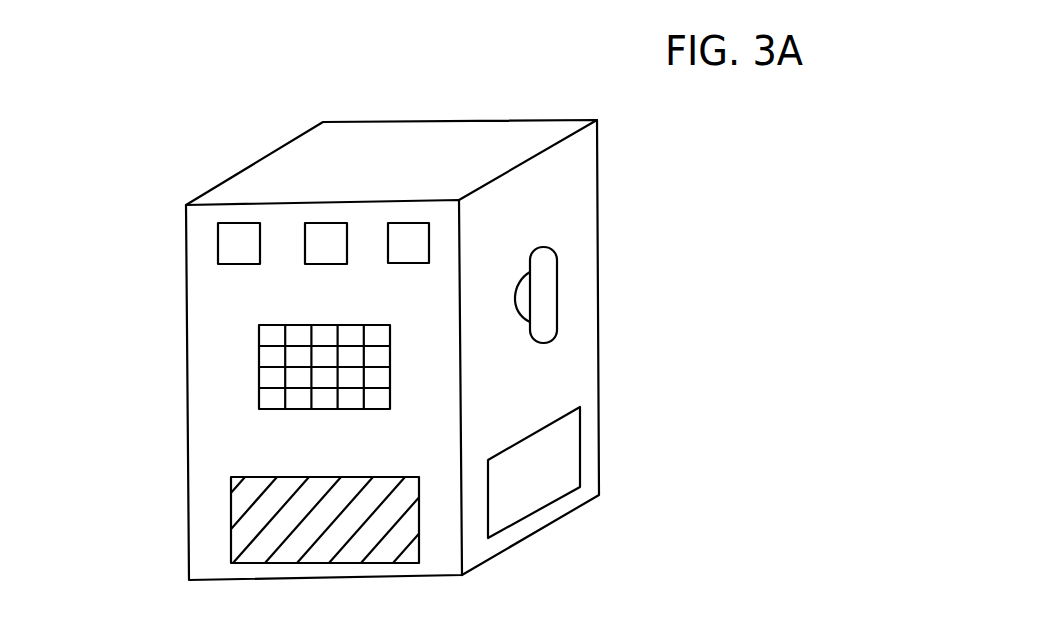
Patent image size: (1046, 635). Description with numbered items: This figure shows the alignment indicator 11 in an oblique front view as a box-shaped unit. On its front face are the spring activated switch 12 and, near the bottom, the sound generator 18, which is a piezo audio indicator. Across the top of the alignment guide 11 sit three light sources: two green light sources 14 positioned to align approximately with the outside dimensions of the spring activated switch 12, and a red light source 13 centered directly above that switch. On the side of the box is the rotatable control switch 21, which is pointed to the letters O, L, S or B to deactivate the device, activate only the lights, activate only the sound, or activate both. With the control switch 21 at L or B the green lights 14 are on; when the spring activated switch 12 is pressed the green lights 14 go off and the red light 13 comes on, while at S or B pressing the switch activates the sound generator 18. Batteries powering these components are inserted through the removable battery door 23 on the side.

The alignment indicator 11 is at (187, 460).
The spring activated switch 12 is at (259, 363).
The red light source 13 is at (330, 222).
The green light sources 14 is at (218, 237).
The sound generator 18 is at (231, 513).
The control switch 21 is at (558, 297).
The removable battery door 23 is at (580, 450).